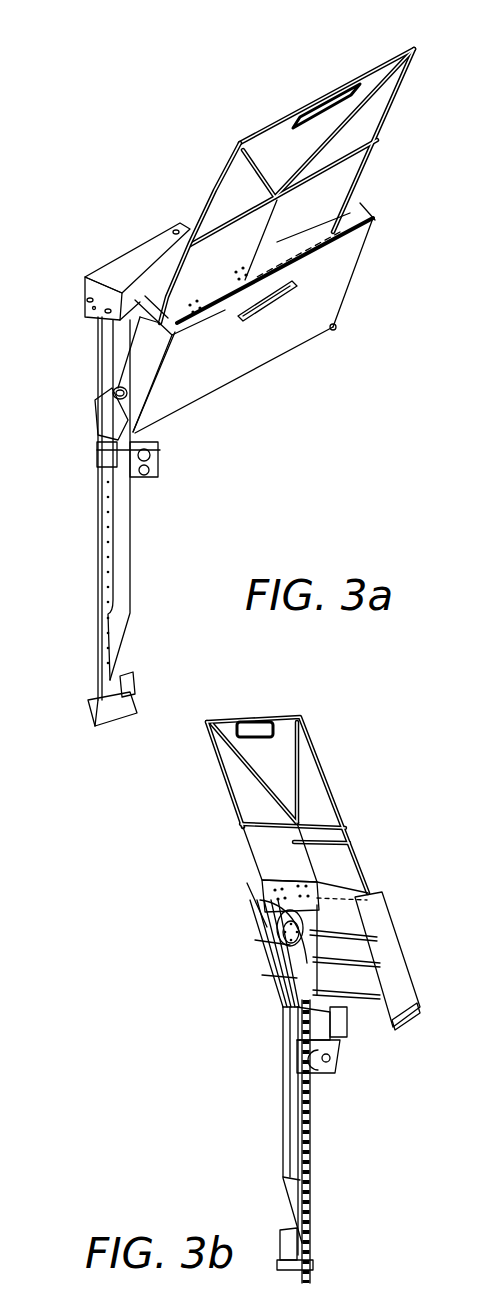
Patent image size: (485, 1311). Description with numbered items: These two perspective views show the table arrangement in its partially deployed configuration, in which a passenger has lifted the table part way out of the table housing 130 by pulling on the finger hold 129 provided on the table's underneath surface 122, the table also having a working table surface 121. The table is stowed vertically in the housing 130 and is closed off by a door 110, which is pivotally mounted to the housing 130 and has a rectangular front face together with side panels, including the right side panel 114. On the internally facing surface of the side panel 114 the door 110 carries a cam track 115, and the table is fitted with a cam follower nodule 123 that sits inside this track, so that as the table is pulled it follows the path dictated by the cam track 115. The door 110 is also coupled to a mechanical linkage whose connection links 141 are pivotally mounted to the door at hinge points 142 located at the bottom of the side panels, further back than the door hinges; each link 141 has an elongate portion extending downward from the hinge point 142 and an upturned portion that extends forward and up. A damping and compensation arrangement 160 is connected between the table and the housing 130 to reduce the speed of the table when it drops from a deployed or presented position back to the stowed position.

In FIG. 3a, the door 110 is at (347, 287).
In FIG. 3b, the door 110 is at (392, 948).
In FIG. 3b, the right side panel 114 is at (253, 900).
In FIG. 3b, the cam track 115 is at (267, 950).
In FIG. 3a, the working table surface 121 is at (213, 193).
In FIG. 3a, the underneath surface 122 is at (383, 108).
In FIG. 3b, the underneath surface 122 is at (343, 863).
In FIG. 3b, the cam follower nodule 123 is at (273, 980).
In FIG. 3a, the finger hold 129 is at (327, 107).
In FIG. 3b, the finger hold 129 is at (262, 693).
In FIG. 3a, the table housing 130 is at (117, 265).
In FIG. 3a, the connection link 141 is at (102, 532).
In FIG. 3a, the hinge point 142 is at (102, 412).
In FIG. 3b, the damping and compensation arrangement 160 is at (324, 1081).